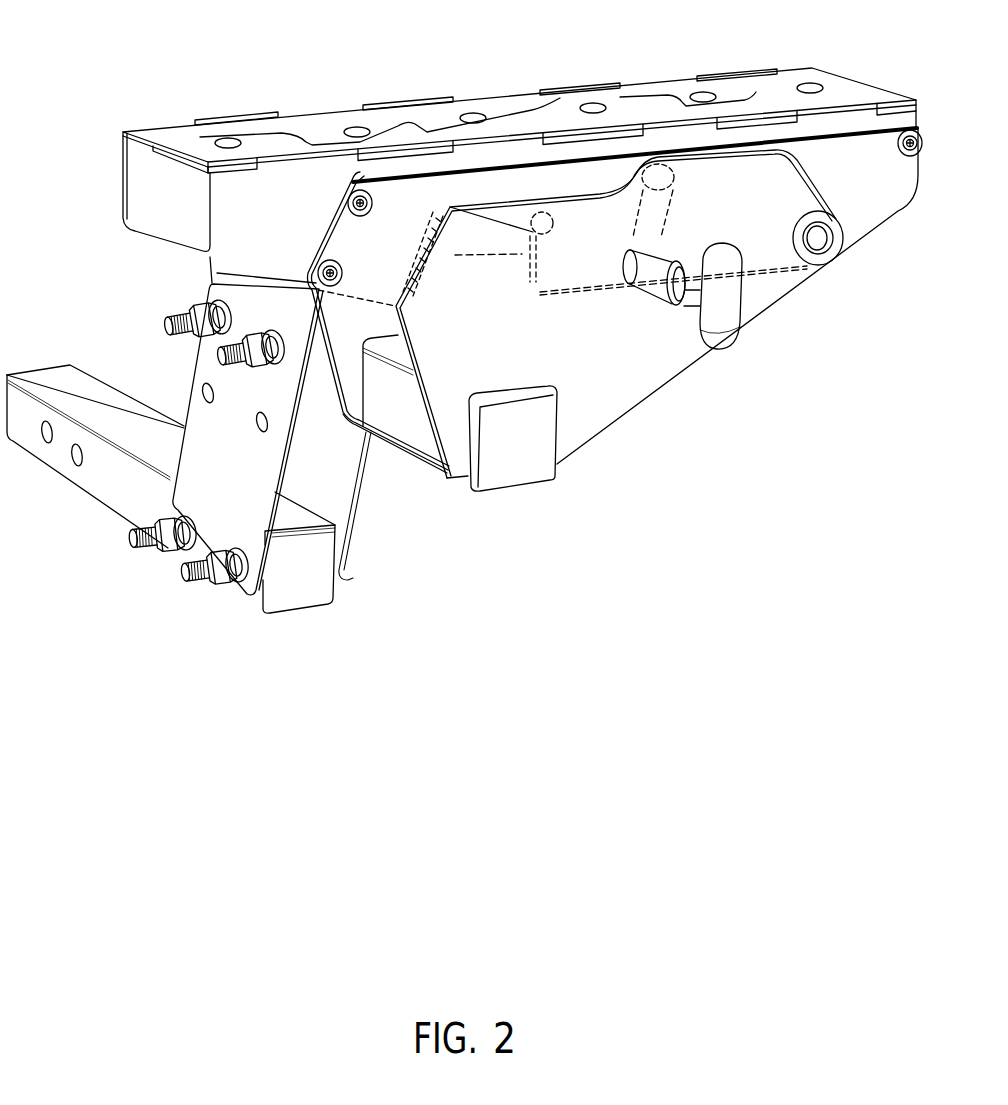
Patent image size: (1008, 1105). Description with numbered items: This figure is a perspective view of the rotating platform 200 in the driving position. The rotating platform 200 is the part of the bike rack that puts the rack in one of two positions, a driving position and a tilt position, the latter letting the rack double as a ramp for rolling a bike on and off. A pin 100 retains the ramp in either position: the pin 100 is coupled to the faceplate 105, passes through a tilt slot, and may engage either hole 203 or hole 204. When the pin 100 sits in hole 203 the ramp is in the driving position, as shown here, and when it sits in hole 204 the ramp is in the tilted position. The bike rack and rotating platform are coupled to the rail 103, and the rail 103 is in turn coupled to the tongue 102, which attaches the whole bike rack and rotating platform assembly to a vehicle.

The rotating platform 200 is at (97, 43).
The pin 100 is at (720, 325).
The tongue 102 is at (92, 478).
The rail 103 is at (522, 465).
The faceplate 105 is at (443, 450).
The hole 203 is at (662, 248).
The hole 204 is at (660, 166).